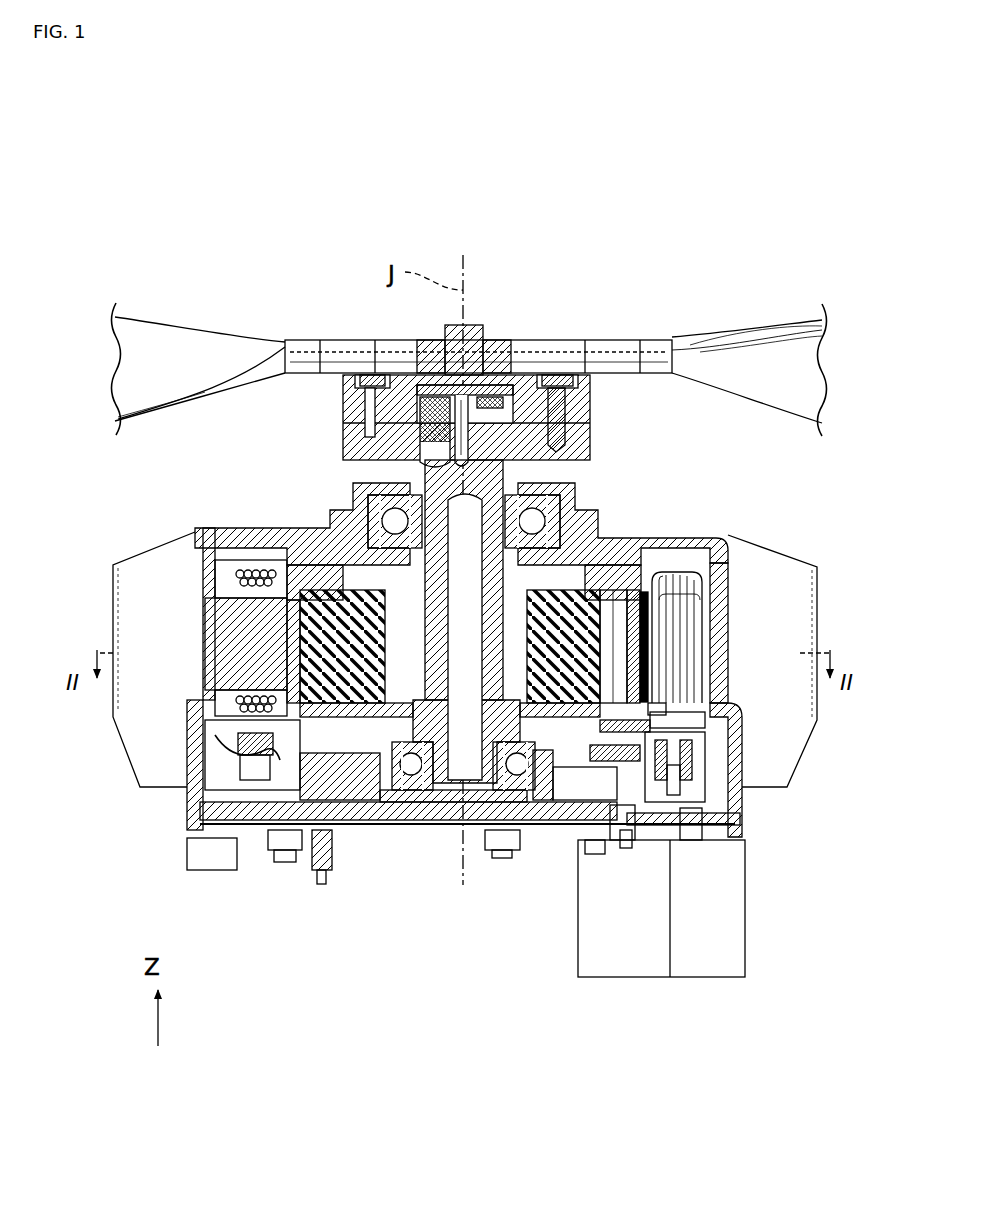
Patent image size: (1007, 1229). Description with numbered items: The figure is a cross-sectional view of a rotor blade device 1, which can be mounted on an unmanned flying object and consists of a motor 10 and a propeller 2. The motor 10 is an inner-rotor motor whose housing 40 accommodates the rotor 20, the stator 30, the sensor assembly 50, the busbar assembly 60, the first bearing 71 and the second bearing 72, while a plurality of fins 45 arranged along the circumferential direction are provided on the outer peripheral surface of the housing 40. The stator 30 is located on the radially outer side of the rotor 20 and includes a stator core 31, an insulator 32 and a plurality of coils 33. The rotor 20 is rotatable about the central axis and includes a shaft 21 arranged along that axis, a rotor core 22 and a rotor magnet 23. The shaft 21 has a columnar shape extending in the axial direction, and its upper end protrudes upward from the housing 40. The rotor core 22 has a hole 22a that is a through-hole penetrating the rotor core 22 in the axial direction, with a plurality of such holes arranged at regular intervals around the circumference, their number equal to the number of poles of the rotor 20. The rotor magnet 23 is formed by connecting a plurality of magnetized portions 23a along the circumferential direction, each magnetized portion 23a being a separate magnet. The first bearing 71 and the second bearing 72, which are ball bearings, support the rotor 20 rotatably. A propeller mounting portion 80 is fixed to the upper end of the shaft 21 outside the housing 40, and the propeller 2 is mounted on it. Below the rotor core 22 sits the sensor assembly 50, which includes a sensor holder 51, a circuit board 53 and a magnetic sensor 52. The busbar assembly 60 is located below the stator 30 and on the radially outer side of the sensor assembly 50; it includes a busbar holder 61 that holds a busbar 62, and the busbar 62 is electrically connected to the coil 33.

The rotor blade device 1 is at (737, 226).
The propeller 2 is at (644, 345).
The motor 10 is at (677, 490).
The rotor 20 is at (522, 566).
The shaft 21 is at (490, 722).
The rotor core 22 is at (350, 742).
The hole 22a is at (652, 625).
The rotor magnet 23 is at (690, 592).
The magnetized portion 23a is at (652, 708).
The stator 30 is at (712, 730).
The stator core 31 is at (228, 638).
The insulator 32 is at (205, 565).
The coil 33 is at (246, 575).
The housing 40 is at (268, 526).
The fin 45 is at (157, 760).
The sensor assembly 50 is at (577, 758).
The sensor holder 51 is at (388, 760).
The magnetic sensor 52 is at (678, 720).
The circuit board 53 is at (598, 752).
The busbar assembly 60 is at (708, 760).
The busbar holder 61 is at (618, 852).
The busbar 62 is at (683, 812).
The first bearing 71 is at (411, 768).
The second bearing 72 is at (385, 520).
The propeller mounting portion 80 is at (592, 425).